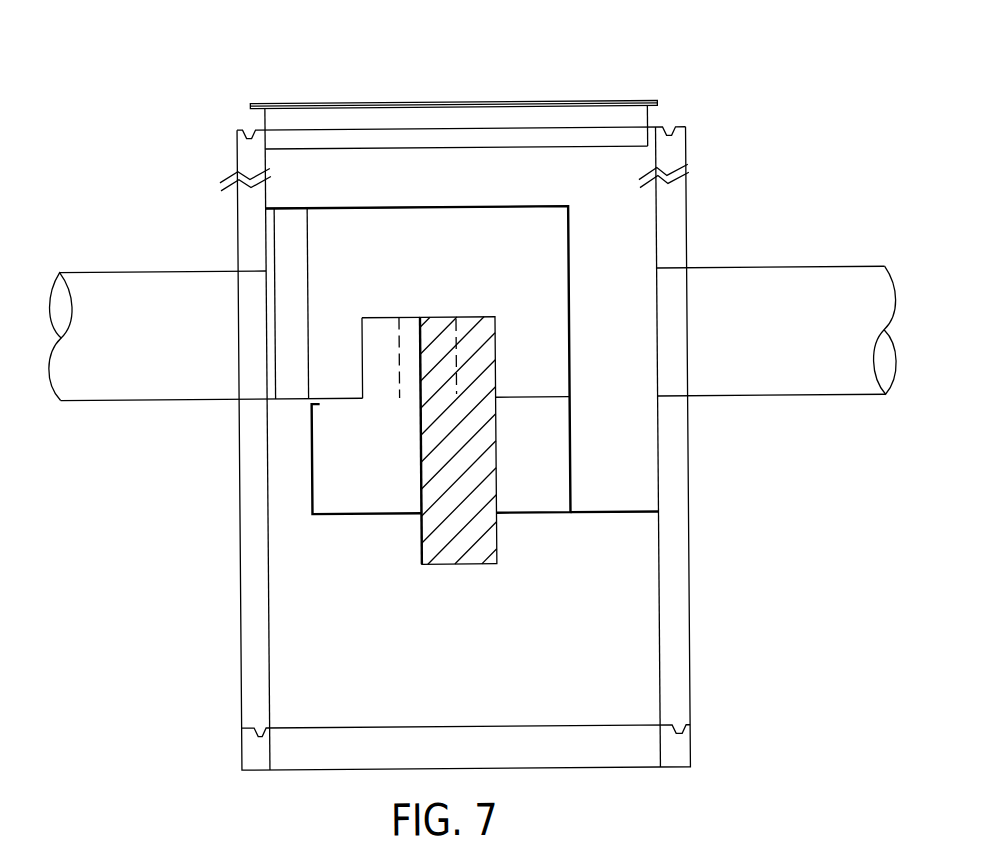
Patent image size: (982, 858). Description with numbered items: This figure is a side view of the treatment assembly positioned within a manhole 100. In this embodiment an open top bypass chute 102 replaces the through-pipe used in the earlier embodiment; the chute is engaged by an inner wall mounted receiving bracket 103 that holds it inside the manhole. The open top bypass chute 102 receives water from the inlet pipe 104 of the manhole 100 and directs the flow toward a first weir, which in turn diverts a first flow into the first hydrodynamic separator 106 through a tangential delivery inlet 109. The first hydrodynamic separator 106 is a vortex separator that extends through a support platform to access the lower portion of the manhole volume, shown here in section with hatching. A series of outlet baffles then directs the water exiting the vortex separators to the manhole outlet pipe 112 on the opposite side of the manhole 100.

The manhole 100 is at (674, 224).
The open top bypass chute 102 is at (543, 207).
The inner wall mounted receiving bracket 103 is at (283, 242).
The inlet pipe 104 is at (137, 268).
The manhole outlet pipe 112 is at (840, 268).
The tangential delivery inlet 109 is at (386, 378).
The first hydrodynamic separator 106 is at (458, 550).